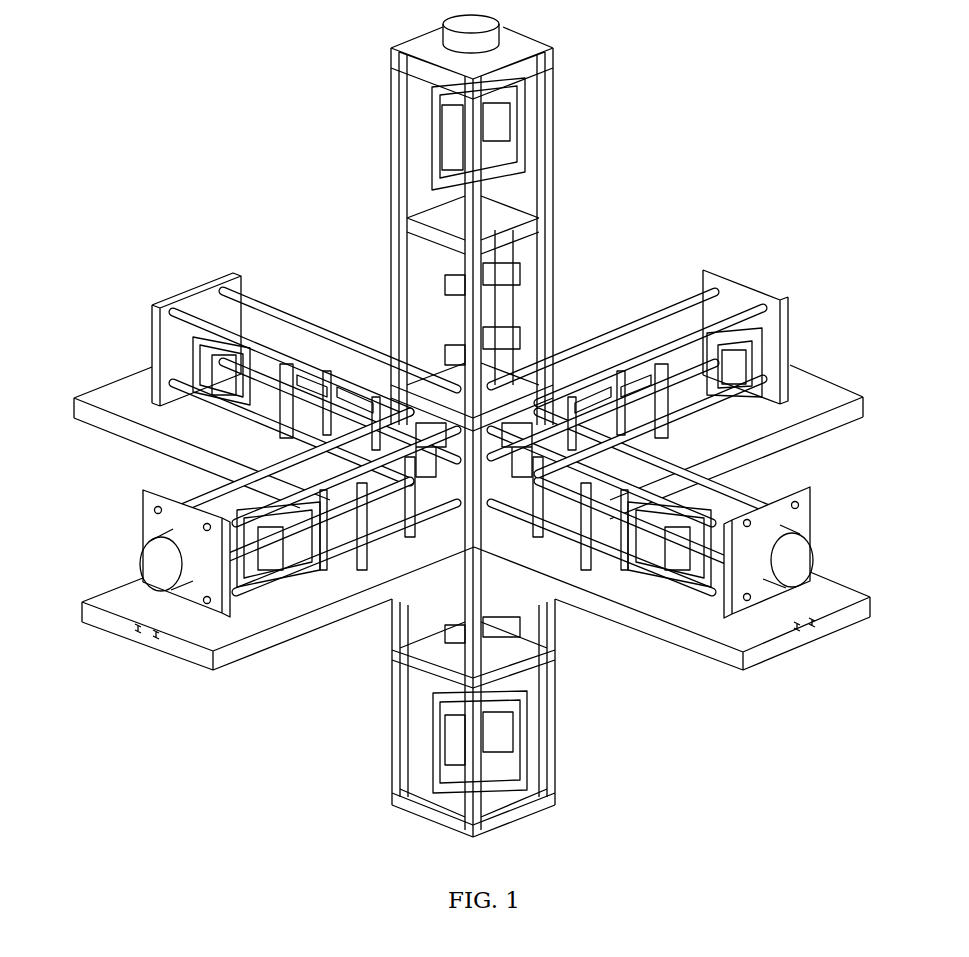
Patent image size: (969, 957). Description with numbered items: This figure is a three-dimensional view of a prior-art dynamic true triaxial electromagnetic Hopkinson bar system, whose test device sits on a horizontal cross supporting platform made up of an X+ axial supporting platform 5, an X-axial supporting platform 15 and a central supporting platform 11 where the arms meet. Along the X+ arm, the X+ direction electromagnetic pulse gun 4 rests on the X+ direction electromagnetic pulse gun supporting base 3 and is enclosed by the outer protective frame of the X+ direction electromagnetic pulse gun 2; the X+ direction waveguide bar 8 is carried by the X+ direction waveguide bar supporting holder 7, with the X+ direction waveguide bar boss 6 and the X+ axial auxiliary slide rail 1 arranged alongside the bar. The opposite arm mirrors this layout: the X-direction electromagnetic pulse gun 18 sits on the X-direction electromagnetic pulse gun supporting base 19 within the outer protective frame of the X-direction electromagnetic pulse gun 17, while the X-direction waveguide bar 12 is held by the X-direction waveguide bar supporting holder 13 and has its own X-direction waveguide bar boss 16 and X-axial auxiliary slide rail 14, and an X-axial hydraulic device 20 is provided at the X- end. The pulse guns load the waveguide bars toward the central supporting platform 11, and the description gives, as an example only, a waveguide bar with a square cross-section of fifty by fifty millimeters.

The X+ axial auxiliary slide rail 1 is at (133, 376).
The outer protective frame of X+ direction electromagnetic pulse gun 2 is at (184, 299).
The X+ direction electromagnetic pulse gun supporting base 3 is at (200, 392).
The X+ direction electromagnetic pulse gun 4 is at (222, 355).
The X+ axial supporting platform 5 is at (215, 440).
The X+ direction waveguide bar boss 6 is at (278, 365).
The X+ direction waveguide bar supporting holder 7 is at (328, 371).
The X+ direction waveguide bar 8 is at (358, 397).
The central supporting platform 11 is at (473, 545).
The X-direction waveguide bar 12 is at (560, 395).
The X-direction waveguide bar supporting holder 13 is at (590, 500).
The X-axial auxiliary slide rail 14 is at (800, 632).
The X-axial supporting platform 15 is at (597, 602).
The X-direction waveguide bar boss 16 is at (650, 500).
The outer protective frame of X-direction electromagnetic pulse gun 17 is at (655, 560).
The X-direction electromagnetic pulse gun 18 is at (706, 483).
The X-direction electromagnetic pulse gun supporting base 19 is at (706, 548).
The X-axial hydraulic device 20 is at (803, 512).